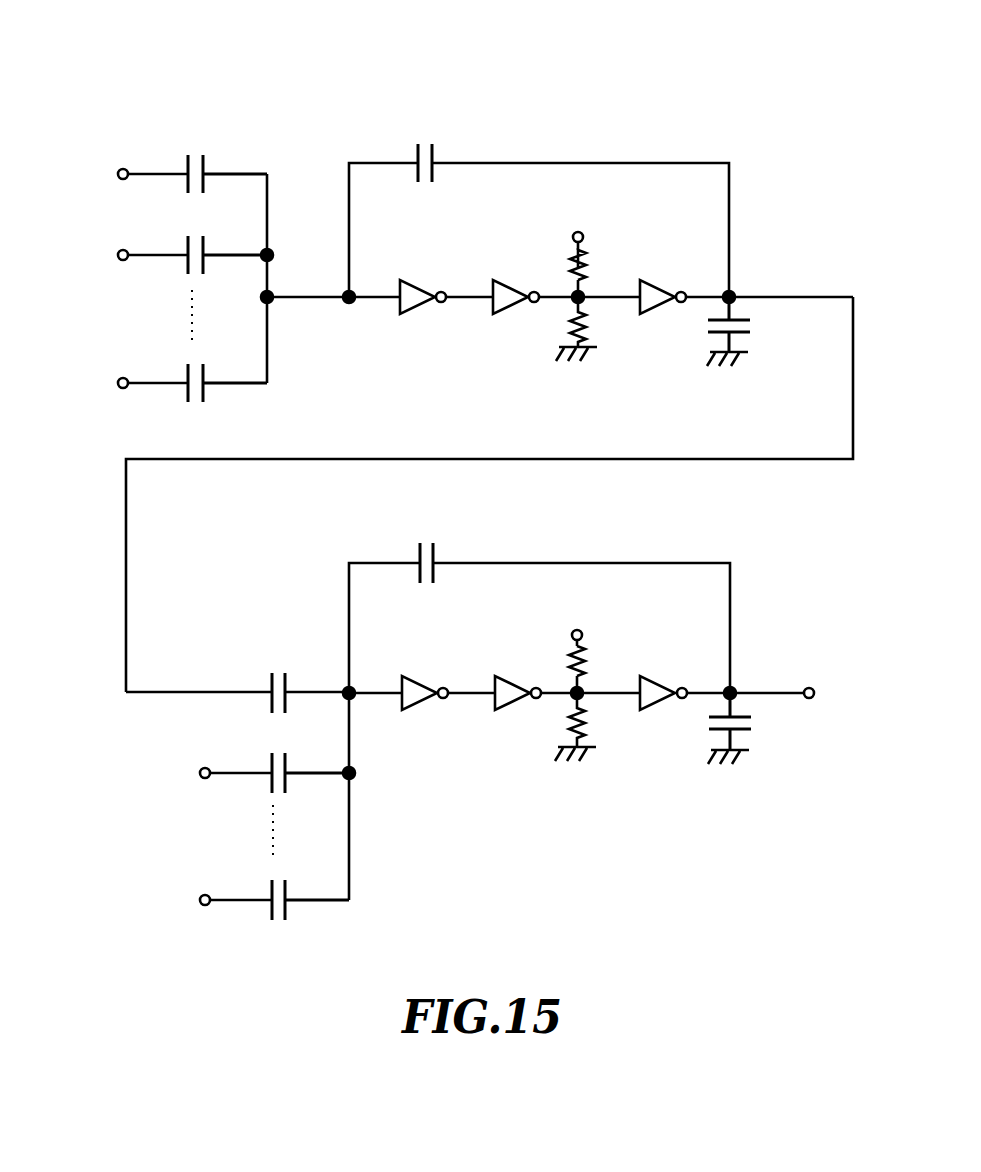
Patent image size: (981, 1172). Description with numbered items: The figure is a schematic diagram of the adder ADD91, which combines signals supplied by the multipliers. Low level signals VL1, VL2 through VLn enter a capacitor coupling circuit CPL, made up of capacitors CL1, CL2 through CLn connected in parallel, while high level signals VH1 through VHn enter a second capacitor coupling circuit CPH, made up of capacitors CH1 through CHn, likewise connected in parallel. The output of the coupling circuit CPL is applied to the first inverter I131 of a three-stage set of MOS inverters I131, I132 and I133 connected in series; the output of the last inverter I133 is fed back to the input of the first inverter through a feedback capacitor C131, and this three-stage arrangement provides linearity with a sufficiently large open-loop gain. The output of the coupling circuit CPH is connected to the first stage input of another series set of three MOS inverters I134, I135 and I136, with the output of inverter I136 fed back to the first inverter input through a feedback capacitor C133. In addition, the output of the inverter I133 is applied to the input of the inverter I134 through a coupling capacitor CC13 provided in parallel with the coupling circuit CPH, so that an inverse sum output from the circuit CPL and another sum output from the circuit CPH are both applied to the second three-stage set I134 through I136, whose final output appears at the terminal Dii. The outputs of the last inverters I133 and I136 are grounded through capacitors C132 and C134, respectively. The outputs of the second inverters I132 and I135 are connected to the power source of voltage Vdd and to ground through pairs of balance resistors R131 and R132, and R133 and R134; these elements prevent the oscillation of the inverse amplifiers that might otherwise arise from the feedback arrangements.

The adder ADD91 is at (698, 93).
The low level signal VL1 is at (120, 170).
The low level signal VL2 is at (120, 255).
The low level signal VLn is at (120, 383).
The capacitor CL1 is at (220, 152).
The capacitor CL2 is at (222, 239).
The capacitor CLn is at (221, 404).
The capacitor coupling circuit CPL is at (302, 358).
The feedback capacitor C131 is at (536, 207).
The first inverter I131 is at (421, 313).
The second inverter I132 is at (552, 279).
The last inverter I133 is at (660, 310).
The balance resistor R131 is at (568, 255).
The balance resistor R132 is at (563, 333).
The power source voltage Vdd is at (667, 462).
The capacitor C132 is at (767, 330).
The coupling capacitor CC13 is at (237, 671).
The feedback capacitor C133 is at (536, 602).
The first inverter I134 is at (422, 715).
The second inverter I135 is at (554, 676).
The last inverter I136 is at (657, 706).
The balance resistor R133 is at (570, 654).
The balance resistor R134 is at (561, 733).
The capacitor C134 is at (770, 732).
The output terminal Dii is at (783, 671).
The high level signal VH1 is at (202, 772).
The high level signal VHn is at (201, 900).
The capacitor CH1 is at (310, 755).
The capacitor CHn is at (310, 885).
The capacitor coupling circuit CPH is at (428, 838).